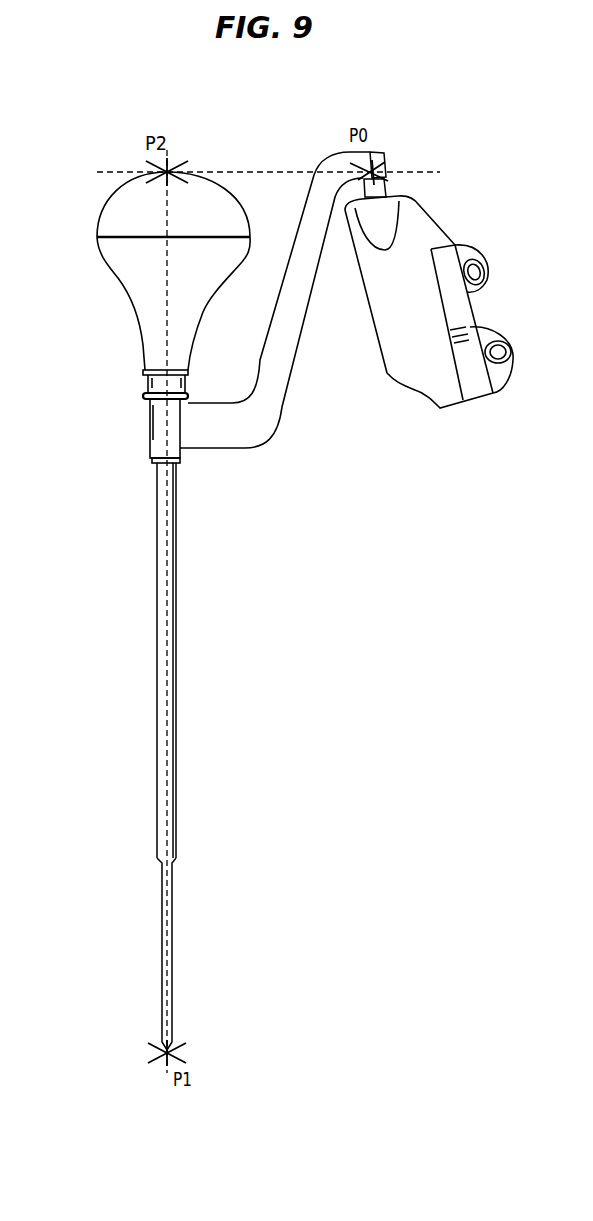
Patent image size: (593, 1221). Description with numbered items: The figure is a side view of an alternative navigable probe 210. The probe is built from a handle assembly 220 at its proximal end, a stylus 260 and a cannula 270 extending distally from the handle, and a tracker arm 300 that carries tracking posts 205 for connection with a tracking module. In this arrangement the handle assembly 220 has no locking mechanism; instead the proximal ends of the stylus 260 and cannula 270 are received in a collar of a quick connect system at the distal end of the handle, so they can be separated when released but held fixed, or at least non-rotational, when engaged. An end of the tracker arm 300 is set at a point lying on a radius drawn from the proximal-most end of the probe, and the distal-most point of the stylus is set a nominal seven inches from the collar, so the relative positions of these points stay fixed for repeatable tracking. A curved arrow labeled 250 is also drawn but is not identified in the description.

The navigable probe 210 is at (424, 115).
The tracking posts 205 is at (386, 172).
The rotation of device / lens assembly 250 is at (508, 307).
The tracker arm 300 is at (308, 220).
The handle assembly 220 is at (72, 173).
The cannula 270 is at (175, 707).
The stylus 260 is at (152, 1043).